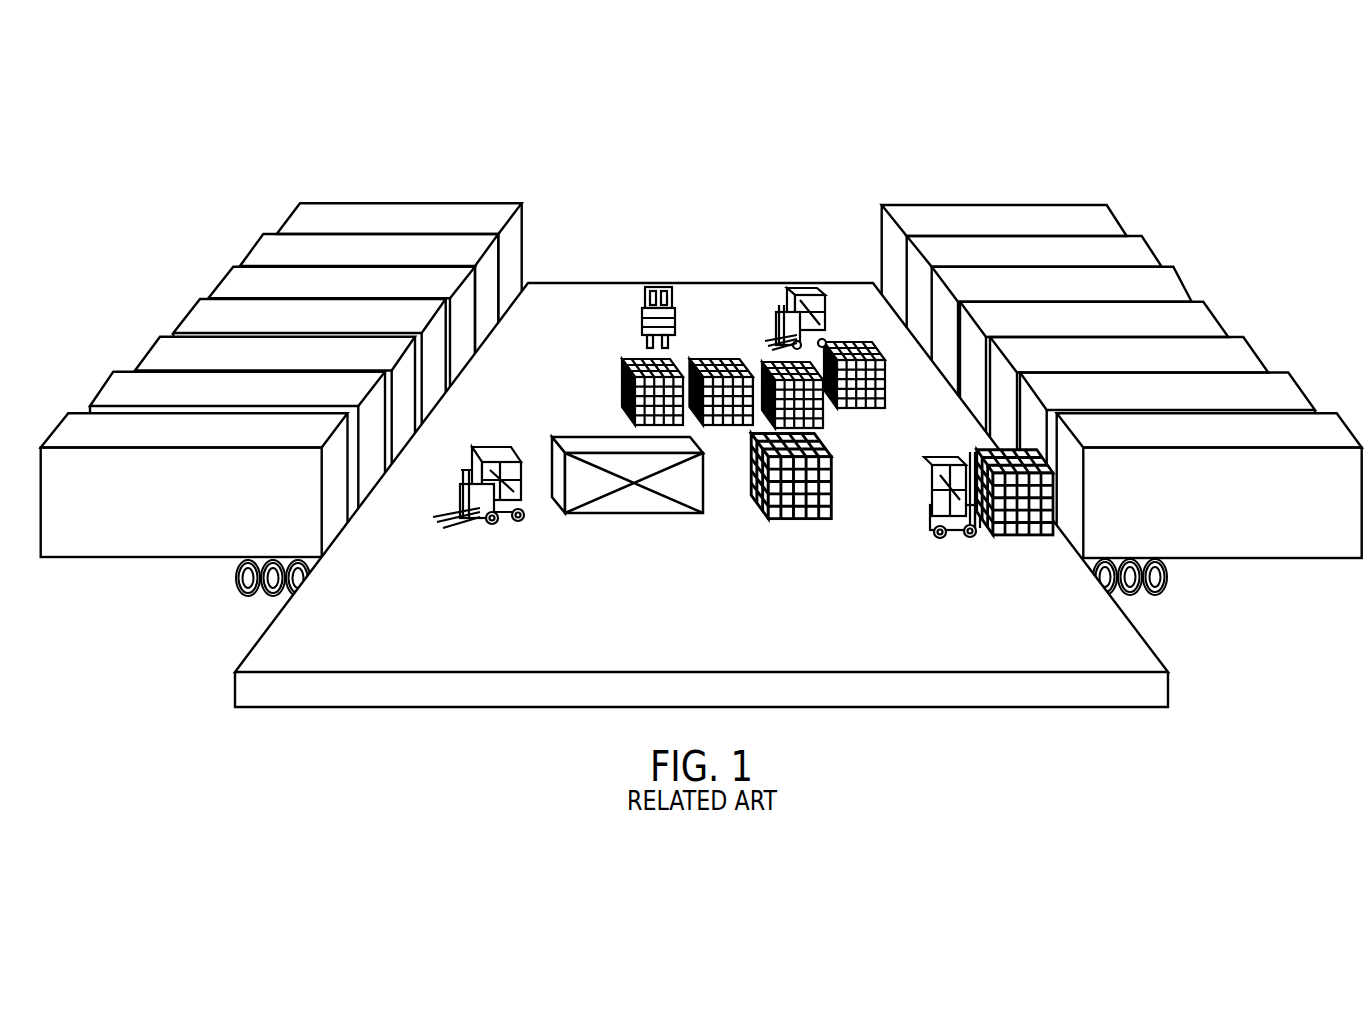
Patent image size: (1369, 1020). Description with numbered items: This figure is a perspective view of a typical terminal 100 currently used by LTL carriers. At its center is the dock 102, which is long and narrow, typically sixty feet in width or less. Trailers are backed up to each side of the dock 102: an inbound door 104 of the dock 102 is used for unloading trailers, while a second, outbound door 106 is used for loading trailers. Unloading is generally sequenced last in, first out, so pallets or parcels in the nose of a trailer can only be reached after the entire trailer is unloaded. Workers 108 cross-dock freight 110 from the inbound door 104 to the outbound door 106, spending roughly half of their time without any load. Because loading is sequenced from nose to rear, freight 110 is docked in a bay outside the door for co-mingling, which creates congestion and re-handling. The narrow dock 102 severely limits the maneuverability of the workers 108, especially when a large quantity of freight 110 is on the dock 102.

The terminal 100 is at (701, 383).
The dock 102 is at (608, 295).
The inbound door 104 is at (473, 205).
The outbound door 106 is at (968, 205).
The workers 108 is at (470, 527).
The freight 110 is at (790, 518).